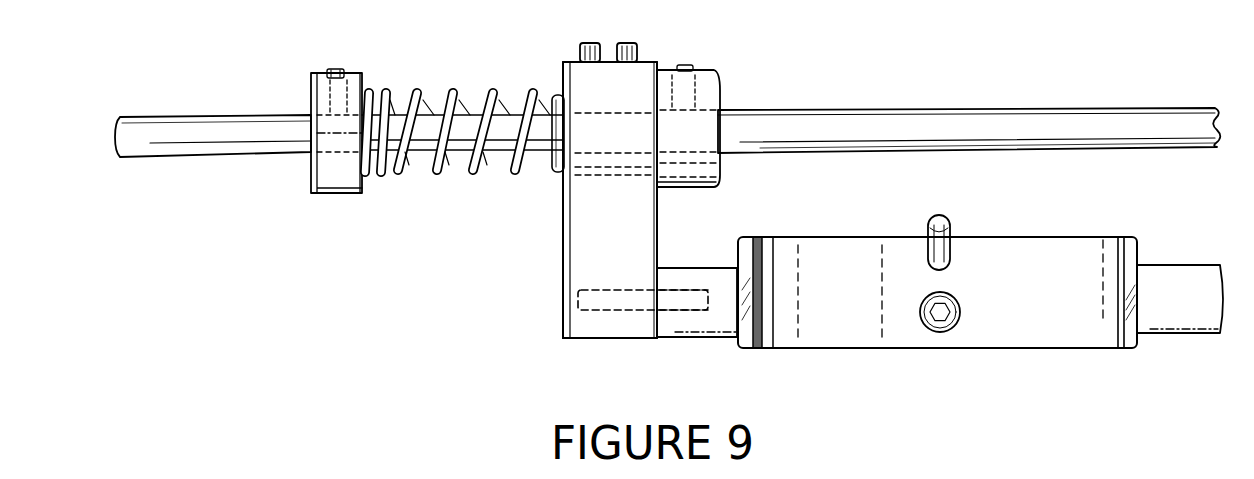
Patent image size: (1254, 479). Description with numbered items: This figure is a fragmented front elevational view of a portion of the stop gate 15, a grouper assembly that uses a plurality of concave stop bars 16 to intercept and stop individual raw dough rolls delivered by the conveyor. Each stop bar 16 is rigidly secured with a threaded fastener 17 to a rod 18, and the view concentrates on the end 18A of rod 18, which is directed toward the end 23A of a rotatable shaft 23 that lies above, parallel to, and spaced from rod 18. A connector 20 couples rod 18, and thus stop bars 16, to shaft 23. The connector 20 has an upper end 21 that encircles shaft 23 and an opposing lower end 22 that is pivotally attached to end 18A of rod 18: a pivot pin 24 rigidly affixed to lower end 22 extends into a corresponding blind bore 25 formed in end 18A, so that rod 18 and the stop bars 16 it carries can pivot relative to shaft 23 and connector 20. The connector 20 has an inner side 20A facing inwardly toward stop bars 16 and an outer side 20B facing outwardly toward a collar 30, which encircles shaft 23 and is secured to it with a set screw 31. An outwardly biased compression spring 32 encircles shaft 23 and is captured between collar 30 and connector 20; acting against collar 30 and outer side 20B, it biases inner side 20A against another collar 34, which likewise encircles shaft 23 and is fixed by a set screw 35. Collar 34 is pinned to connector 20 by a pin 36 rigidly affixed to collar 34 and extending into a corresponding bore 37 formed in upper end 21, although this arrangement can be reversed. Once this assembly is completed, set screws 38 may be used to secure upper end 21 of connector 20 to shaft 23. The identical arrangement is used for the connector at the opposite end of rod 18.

The stop gate 15 is at (1133, 106).
The stop bar 16 is at (1025, 327).
The threaded fastener 17 is at (943, 313).
The rod 18 is at (1195, 287).
The end of rod 18A is at (687, 327).
The connector 20 is at (615, 218).
The inner side of connector 20A is at (660, 207).
The outer side of connector 20B is at (565, 277).
The upper end of connector 21 is at (645, 72).
The lower end of connector 22 is at (583, 343).
The rotatable shaft 23 is at (992, 123).
The end of shaft 23A is at (153, 137).
The pivot pin 24 is at (620, 300).
The blind bore 25 is at (687, 290).
The collar 30 is at (331, 172).
The set screw 31 is at (340, 67).
The compression spring 32 is at (435, 173).
The collar 34 is at (707, 100).
The set screw 35 is at (697, 70).
The pin 36 is at (623, 173).
The bore 37 is at (590, 177).
The set screws 38 is at (612, 47).